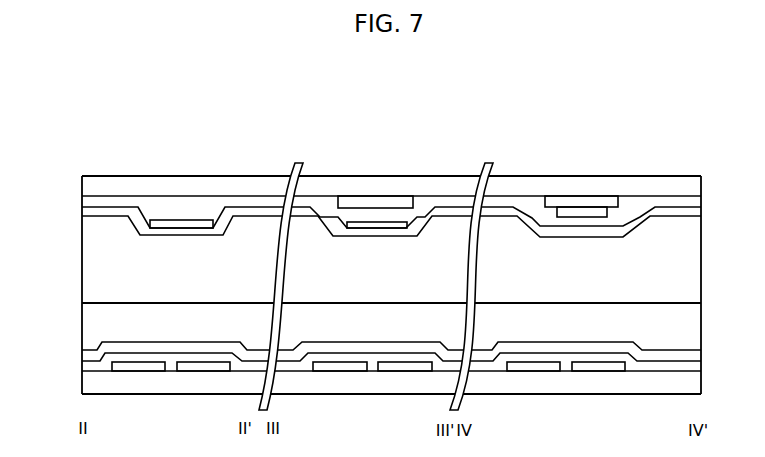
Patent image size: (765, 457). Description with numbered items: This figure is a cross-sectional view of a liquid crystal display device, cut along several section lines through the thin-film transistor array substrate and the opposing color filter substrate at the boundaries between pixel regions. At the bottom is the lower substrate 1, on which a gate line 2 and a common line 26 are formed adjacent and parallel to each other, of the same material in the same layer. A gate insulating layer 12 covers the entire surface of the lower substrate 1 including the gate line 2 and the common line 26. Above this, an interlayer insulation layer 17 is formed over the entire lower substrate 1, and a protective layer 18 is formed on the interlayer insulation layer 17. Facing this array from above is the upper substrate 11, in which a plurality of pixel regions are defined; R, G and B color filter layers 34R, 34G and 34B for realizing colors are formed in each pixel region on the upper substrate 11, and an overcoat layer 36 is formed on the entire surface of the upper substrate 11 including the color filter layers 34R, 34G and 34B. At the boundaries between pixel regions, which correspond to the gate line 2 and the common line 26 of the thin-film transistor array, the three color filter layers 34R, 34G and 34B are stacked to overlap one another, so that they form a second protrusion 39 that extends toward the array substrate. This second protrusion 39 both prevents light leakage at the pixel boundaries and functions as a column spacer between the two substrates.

The lower substrate 1 is at (83, 382).
The gate line 2 is at (138, 366).
The common line 26 is at (192, 366).
The upper substrate 11 is at (695, 187).
The gate insulating layer 12 is at (695, 367).
The interlayer insulation layer 17 is at (695, 353).
The protective layer 18 is at (695, 322).
The overcoat layer 36 is at (695, 212).
The second protrusion 39 is at (67, 183).
The R color filter layer 34R is at (147, 200).
The G color filter layer 34G is at (210, 210).
The B color filter layer 34B is at (177, 222).